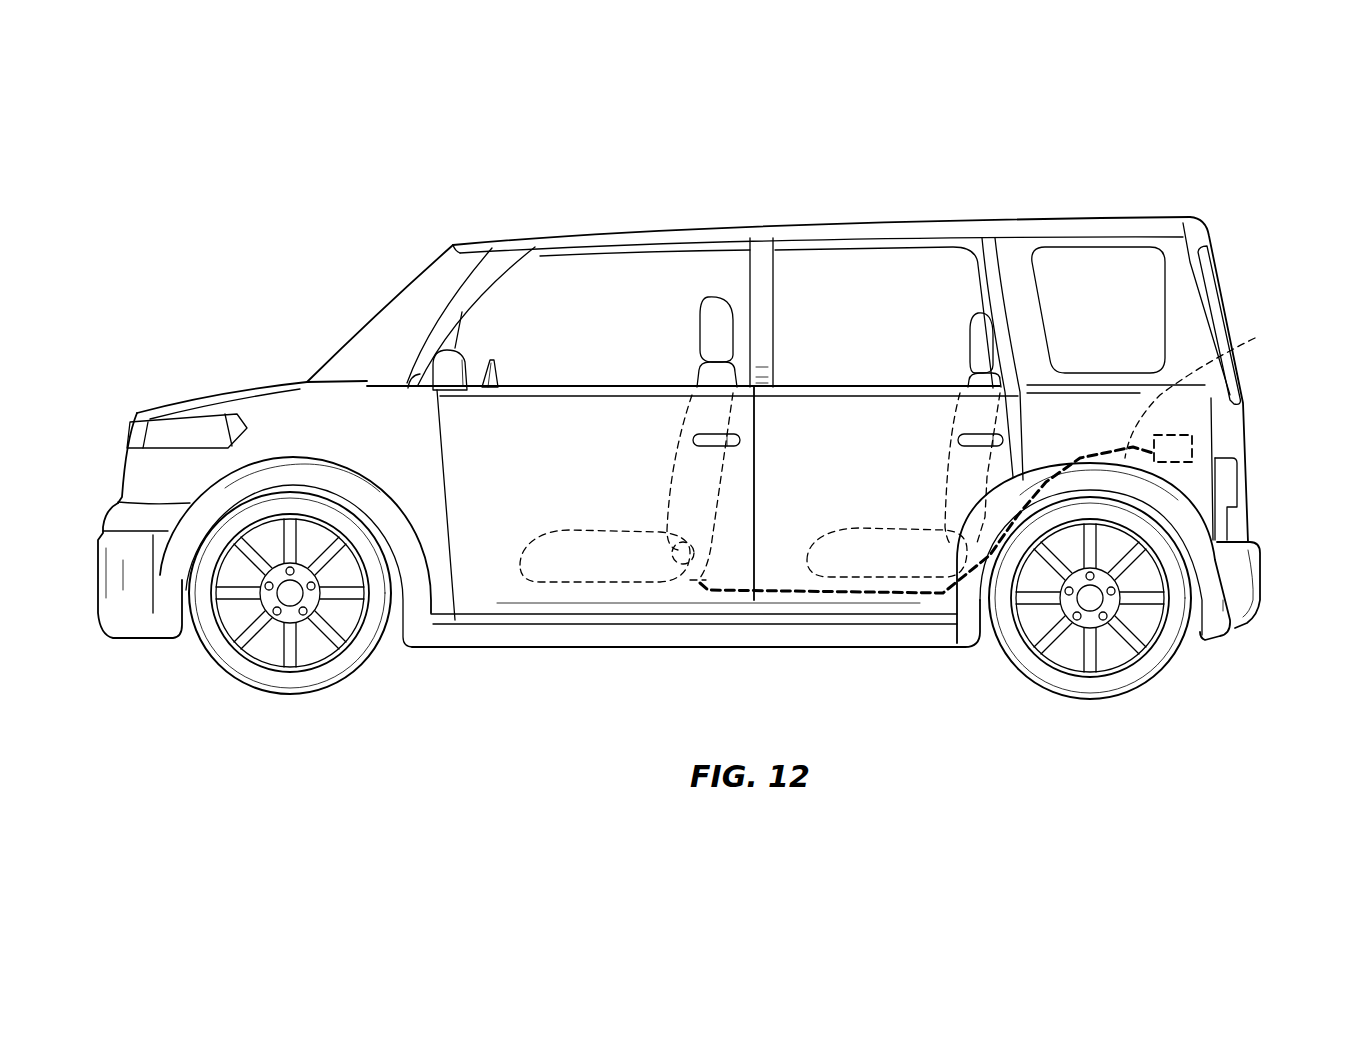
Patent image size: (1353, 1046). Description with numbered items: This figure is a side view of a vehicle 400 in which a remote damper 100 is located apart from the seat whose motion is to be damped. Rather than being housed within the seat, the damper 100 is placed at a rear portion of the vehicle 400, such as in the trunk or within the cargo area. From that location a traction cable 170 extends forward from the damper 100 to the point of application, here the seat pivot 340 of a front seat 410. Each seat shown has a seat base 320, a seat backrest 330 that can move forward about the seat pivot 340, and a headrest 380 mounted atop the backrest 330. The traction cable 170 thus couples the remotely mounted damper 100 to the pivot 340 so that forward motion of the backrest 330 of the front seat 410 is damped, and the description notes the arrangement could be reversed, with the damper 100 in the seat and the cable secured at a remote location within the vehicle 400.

The vehicle 400 is at (887, 190).
The front seat 410 is at (513, 569).
The headrest 380 is at (700, 321).
The seat backrest 330 is at (670, 472).
The seat base 320 is at (585, 578).
The seat pivot 340 is at (675, 592).
The damper 100 is at (1185, 424).
The traction cable 170 is at (1212, 389).